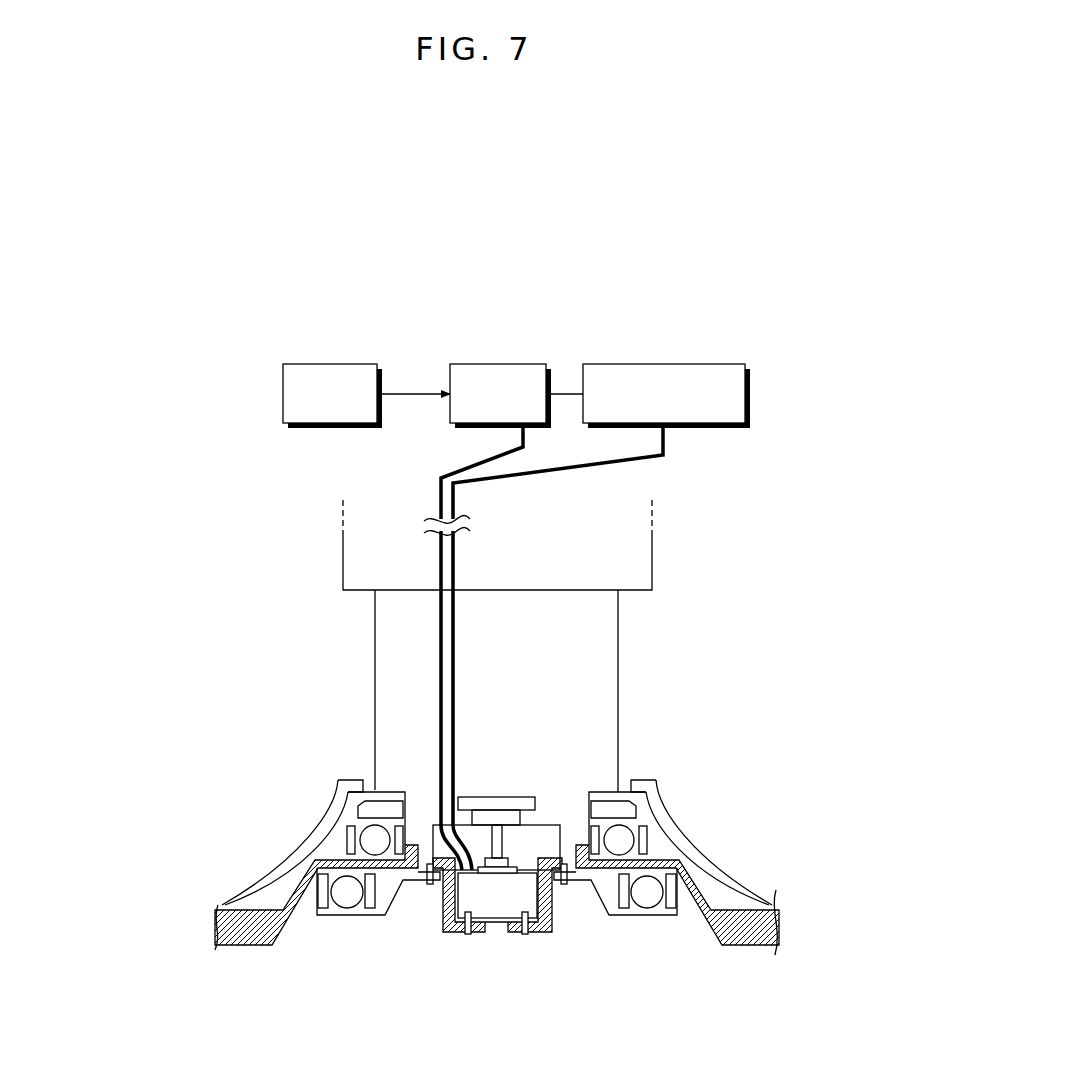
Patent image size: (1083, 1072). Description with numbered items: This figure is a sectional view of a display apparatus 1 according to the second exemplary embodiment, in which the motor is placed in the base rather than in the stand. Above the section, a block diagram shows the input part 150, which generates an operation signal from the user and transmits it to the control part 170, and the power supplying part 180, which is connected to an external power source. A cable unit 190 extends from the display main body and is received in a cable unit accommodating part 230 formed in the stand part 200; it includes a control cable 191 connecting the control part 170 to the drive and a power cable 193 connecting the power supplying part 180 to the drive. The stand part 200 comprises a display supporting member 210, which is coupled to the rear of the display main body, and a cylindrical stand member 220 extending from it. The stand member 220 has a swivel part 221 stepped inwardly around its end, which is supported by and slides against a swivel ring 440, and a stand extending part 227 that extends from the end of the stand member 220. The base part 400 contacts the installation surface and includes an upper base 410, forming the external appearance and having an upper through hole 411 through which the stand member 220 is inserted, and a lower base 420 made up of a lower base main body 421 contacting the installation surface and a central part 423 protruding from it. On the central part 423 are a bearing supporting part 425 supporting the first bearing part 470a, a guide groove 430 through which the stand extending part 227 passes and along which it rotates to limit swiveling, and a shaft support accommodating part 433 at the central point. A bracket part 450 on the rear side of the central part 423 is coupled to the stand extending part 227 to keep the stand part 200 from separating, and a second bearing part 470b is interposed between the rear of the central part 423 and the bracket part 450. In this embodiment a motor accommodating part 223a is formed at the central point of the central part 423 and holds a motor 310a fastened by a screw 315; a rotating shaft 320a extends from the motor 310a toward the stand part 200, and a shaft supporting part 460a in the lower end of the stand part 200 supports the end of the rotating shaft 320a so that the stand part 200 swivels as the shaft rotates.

The display apparatus 1 is at (745, 343).
The input part 150 is at (328, 362).
The control part 170 is at (495, 362).
The power supplying part 180 is at (662, 362).
The cable unit 190 is at (548, 536).
The control cable 191 is at (513, 452).
The power cable 193 is at (597, 466).
The stand part 200 is at (733, 538).
The display supporting member 210 is at (650, 538).
The stand member 220 is at (612, 603).
The swivel part 221 is at (600, 792).
The stand extending part 227 is at (555, 825).
The cable unit accommodating part 230 is at (437, 672).
The motor accommodating part 223a is at (458, 932).
The motor 310a is at (498, 918).
The screw 315 is at (525, 935).
The rotating shaft 320a is at (455, 790).
The base part 400 is at (258, 858).
The upper base 410 is at (337, 812).
The upper through hole 411 is at (357, 915).
The lower base 420 is at (283, 877).
The lower base main body 421 is at (255, 907).
The central part 423 is at (333, 858).
The bearing supporting part 425 is at (565, 885).
The guide groove 430 is at (416, 905).
The shaft support accommodating part 433 is at (540, 825).
The swivel ring 440 is at (633, 803).
The bracket part 450 is at (648, 915).
The shaft supporting part 460a is at (481, 797).
The first bearing part 470a is at (627, 837).
The second bearing part 470b is at (340, 900).